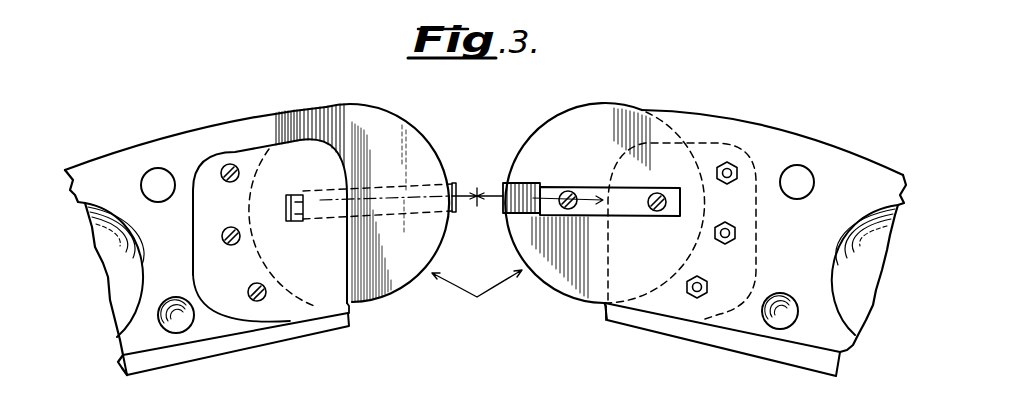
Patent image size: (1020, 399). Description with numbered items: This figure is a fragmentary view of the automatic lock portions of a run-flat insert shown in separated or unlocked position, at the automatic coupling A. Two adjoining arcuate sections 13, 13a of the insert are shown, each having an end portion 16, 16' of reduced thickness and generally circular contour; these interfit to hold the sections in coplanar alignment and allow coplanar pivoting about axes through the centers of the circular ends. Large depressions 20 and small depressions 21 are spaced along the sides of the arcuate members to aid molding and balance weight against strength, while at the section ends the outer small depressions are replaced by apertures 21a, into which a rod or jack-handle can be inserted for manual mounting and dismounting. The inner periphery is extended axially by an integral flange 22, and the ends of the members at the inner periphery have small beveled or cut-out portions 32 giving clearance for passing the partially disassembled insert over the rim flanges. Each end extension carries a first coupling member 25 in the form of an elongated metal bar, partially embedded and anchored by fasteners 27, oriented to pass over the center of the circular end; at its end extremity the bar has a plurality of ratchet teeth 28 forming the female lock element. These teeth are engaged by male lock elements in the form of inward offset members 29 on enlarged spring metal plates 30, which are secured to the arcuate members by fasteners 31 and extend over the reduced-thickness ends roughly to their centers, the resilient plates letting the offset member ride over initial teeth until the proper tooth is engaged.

The left hinge body half 13a is at (110, 160).
The arcuate section 13 is at (725, 117).
The end portion 16' is at (349, 184).
The end portion 16 is at (604, 185).
The aperture 21a is at (157, 168).
The small depression 21 is at (168, 327).
The large depression 20 is at (133, 239).
The flange 22 is at (212, 342).
The spring metal plate 30 is at (193, 280).
The fastener 31 is at (223, 231).
The inward offset member 29 is at (303, 222).
The fastener 27 is at (578, 193).
The ratchet teeth 28 is at (517, 212).
The first coupling member 25 is at (466, 185).
The beveled or cut-out portion 32 is at (350, 325).
The automatic coupling A is at (477, 300).